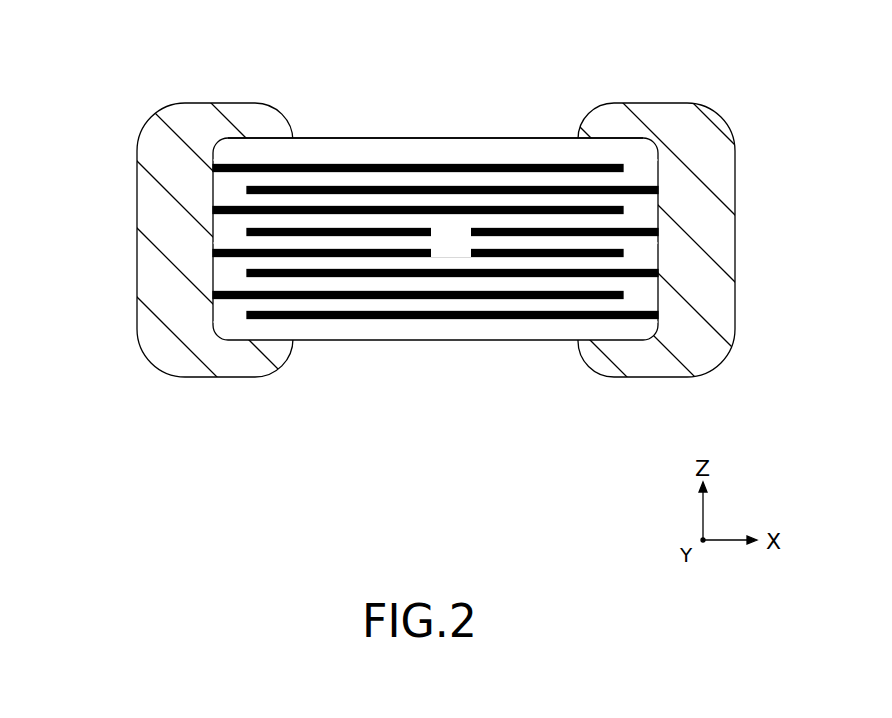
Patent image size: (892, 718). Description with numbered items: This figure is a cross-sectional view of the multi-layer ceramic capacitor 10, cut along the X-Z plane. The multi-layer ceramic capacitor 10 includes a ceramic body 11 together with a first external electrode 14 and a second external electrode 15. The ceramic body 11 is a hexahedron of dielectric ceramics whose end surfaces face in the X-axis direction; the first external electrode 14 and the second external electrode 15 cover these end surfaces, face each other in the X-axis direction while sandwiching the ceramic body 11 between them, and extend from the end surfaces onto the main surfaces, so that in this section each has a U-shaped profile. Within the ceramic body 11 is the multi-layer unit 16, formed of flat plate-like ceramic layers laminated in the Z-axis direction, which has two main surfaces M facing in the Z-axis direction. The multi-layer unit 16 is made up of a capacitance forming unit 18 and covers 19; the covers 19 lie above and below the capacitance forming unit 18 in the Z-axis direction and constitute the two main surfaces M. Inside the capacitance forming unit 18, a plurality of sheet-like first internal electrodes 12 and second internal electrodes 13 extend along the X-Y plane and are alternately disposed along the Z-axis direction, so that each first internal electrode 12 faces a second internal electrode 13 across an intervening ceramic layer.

The multi-layer ceramic capacitor 10 is at (166, 78).
The ceramic body 11 is at (579, 95).
The first internal electrodes 12 is at (318, 295).
The second internal electrodes 13 is at (505, 315).
The first external electrode 14 is at (140, 240).
The second external electrode 15 is at (725, 238).
The multi-layer unit 16 is at (451, 111).
The capacitance forming unit 18 is at (467, 254).
The covers 19 is at (486, 158).
The main surfaces M is at (420, 138).